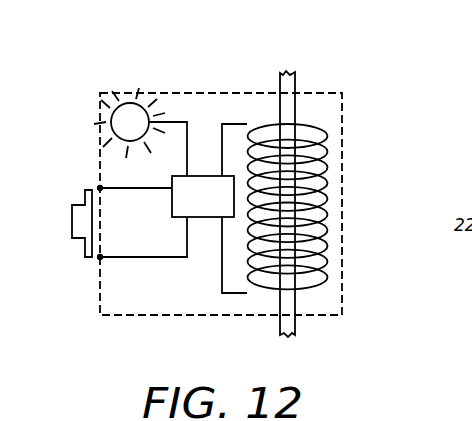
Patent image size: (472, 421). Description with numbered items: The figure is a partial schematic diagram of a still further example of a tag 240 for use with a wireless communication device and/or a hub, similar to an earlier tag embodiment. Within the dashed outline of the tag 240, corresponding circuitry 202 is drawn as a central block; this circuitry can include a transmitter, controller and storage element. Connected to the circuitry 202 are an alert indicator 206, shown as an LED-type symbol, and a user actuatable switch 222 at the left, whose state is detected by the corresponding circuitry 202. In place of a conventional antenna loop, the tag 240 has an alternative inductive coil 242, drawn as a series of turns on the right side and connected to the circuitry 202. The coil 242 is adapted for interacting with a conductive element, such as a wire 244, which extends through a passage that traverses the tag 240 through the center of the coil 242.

The tag 240 is at (350, 70).
The alert indicator 206 is at (137, 97).
The corresponding circuitry 202 is at (172, 208).
The user actuatable switch 222 is at (72, 222).
The inductive coil 242 is at (327, 196).
The wire 244 is at (280, 77).